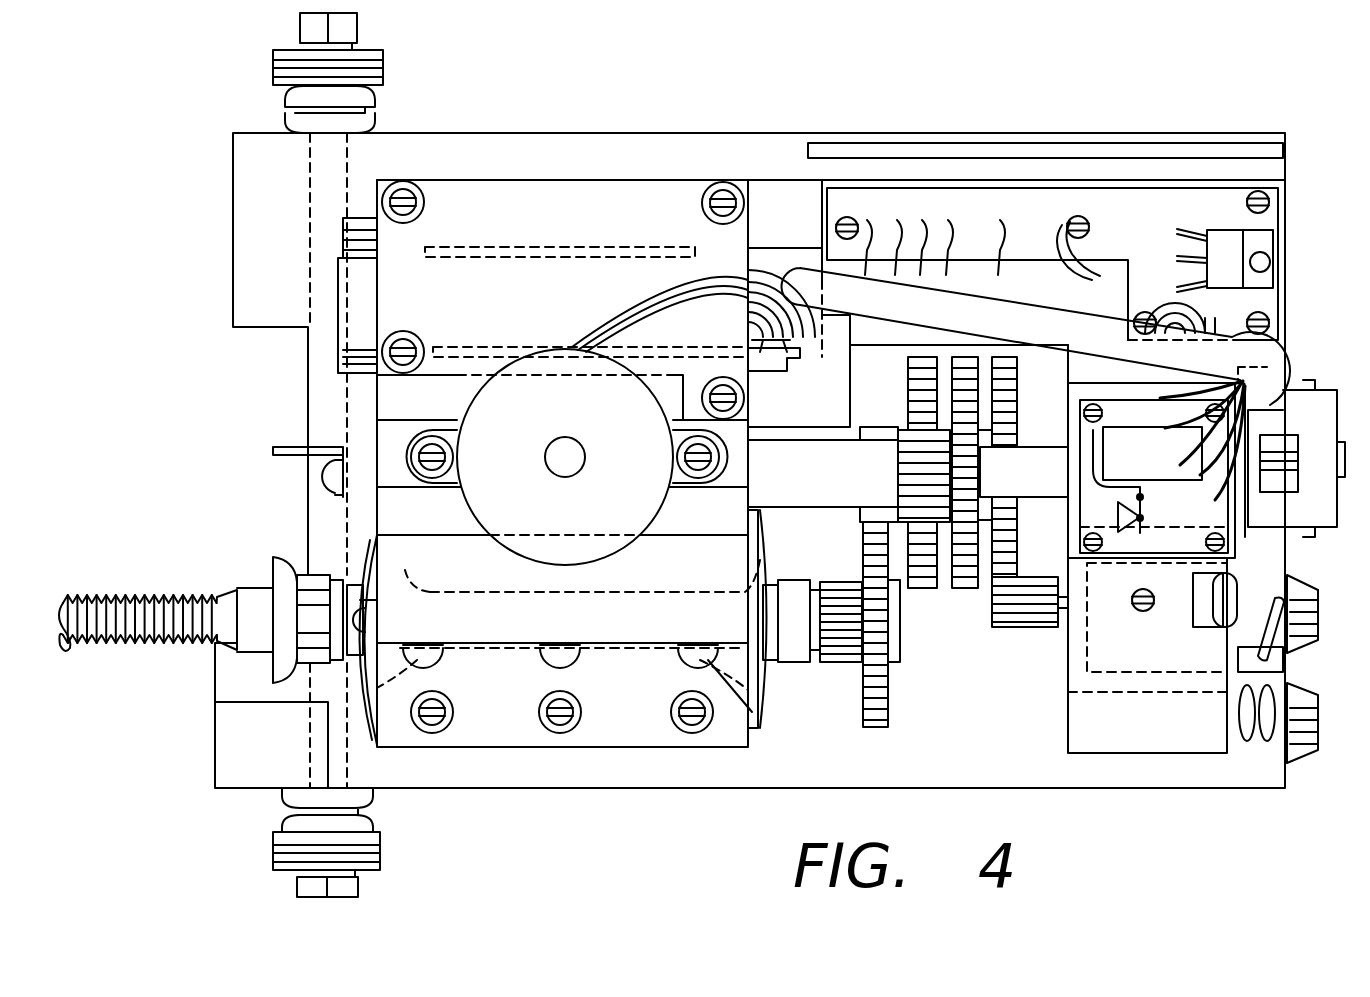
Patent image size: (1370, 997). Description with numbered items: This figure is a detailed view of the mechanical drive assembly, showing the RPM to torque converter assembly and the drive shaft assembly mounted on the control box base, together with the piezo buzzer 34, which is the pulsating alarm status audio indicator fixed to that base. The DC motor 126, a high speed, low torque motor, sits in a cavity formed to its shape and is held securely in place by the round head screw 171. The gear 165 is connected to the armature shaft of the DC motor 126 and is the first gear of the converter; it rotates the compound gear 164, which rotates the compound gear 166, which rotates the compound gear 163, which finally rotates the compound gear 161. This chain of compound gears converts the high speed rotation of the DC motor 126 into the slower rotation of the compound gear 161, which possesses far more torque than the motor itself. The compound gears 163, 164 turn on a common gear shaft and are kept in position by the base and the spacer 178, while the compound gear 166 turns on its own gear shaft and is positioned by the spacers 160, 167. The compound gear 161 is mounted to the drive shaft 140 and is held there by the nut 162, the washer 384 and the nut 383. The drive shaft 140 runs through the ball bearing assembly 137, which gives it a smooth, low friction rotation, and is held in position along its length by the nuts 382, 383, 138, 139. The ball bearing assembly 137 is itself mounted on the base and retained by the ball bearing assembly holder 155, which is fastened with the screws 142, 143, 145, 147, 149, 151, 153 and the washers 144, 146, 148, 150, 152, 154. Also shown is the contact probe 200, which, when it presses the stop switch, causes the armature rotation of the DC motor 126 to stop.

The piezo buzzer 34 is at (480, 513).
The DC motor 126 is at (1270, 548).
The ball bearing assembly 137 is at (380, 745).
The nut 138 is at (345, 580).
The nut 139 is at (290, 560).
The drive shaft 140 is at (110, 608).
The screw 142 is at (365, 605).
The screw 143 is at (450, 715).
The washer 144 is at (440, 735).
The screw 145 is at (580, 712).
The washer 146 is at (538, 747).
The screw 147 is at (680, 712).
The washer 148 is at (692, 735).
The screw 149 is at (410, 660).
The washer 150 is at (453, 643).
The screw 151 is at (440, 650).
The washer 152 is at (583, 648).
The screw 153 is at (755, 705).
The washer 154 is at (700, 645).
The ball bearing assembly holder 155 is at (665, 535).
The spacer 160 is at (848, 492).
The compound gear 161 is at (890, 715).
The nut 162 is at (898, 665).
The compound gear 163 is at (922, 590).
The compound gear 164 is at (1000, 578).
The gear 165 is at (1012, 628).
The compound gear 166 is at (967, 590).
The spacer 167 is at (988, 492).
The screw 171 is at (1150, 608).
The spacer 178 is at (1053, 440).
The contact probe 200 is at (273, 445).
The nut 382 is at (765, 590).
The nut 383 is at (787, 652).
The washer 384 is at (815, 655).